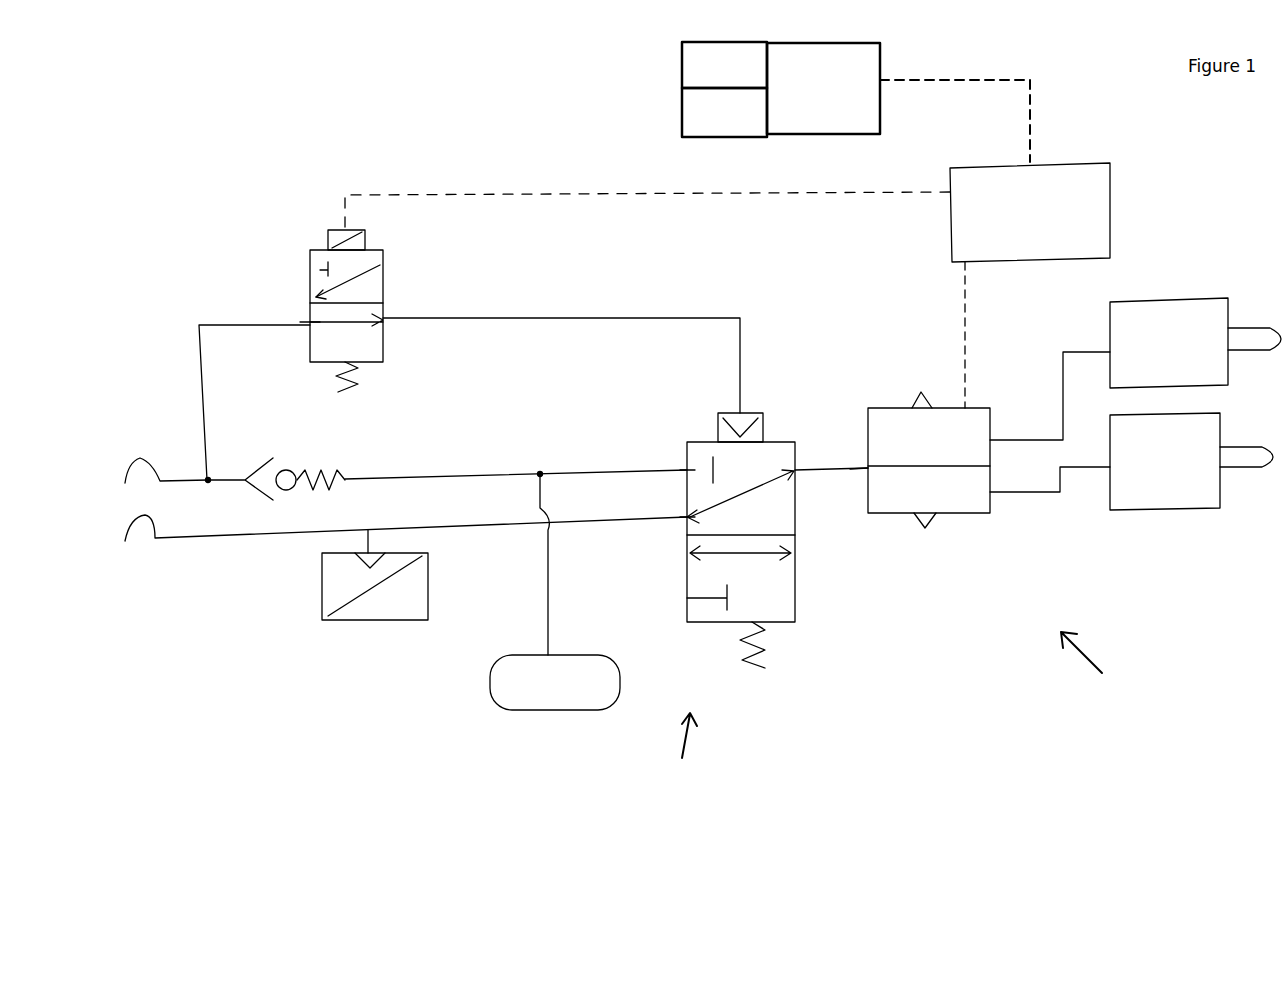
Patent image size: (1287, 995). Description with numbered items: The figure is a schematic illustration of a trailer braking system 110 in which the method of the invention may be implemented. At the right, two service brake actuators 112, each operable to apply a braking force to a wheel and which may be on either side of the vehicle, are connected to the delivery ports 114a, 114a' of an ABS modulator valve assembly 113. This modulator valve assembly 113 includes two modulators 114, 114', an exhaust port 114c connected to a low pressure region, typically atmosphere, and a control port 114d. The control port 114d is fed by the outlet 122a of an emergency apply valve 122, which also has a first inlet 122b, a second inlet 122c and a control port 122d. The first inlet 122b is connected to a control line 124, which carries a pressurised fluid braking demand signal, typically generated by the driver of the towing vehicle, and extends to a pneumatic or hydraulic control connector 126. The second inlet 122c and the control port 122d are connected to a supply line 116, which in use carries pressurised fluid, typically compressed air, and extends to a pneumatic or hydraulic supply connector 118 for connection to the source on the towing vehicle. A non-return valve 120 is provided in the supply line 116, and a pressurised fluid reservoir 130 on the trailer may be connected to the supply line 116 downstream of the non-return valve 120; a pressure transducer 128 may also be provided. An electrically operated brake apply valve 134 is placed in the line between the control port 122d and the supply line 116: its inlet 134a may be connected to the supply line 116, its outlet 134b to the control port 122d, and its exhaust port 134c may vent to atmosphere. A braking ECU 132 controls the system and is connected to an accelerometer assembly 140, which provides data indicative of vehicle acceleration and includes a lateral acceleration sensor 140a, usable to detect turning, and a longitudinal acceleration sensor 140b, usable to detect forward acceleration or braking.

The trailer braking system 110 is at (684, 748).
The service brake actuator 112 is at (1195, 404).
The ABS modulator valve assembly 113 is at (1093, 669).
The modulator 114 is at (940, 521).
The modulator 114' is at (929, 394).
The delivery port 114a is at (1050, 527).
The delivery port 114a' is at (1050, 382).
The exhaust port 114c is at (928, 530).
The control port 114d is at (853, 497).
The supply line 116 is at (452, 468).
The supply connector 118 is at (128, 458).
The non-return valve 120 is at (308, 453).
The emergency apply valve 122 is at (683, 578).
The outlet 122a is at (790, 470).
The first inlet 122b is at (690, 518).
The second inlet 122c is at (682, 484).
The control port 122d is at (752, 402).
The control line 124 is at (487, 527).
The control connector 126 is at (366, 526).
The pressure transducer 128 is at (320, 597).
The pressurised fluid reservoir 130 is at (555, 682).
The braking ECU 132 is at (727, 285).
The brake apply valve 134 is at (386, 286).
The inlet 134a is at (298, 320).
The outlet 134b is at (392, 320).
The exhaust port 134c is at (306, 350).
The accelerometer assembly 140 is at (898, 102).
The lateral acceleration sensor 140a is at (724, 65).
The longitudinal acceleration sensor 140b is at (724, 112).